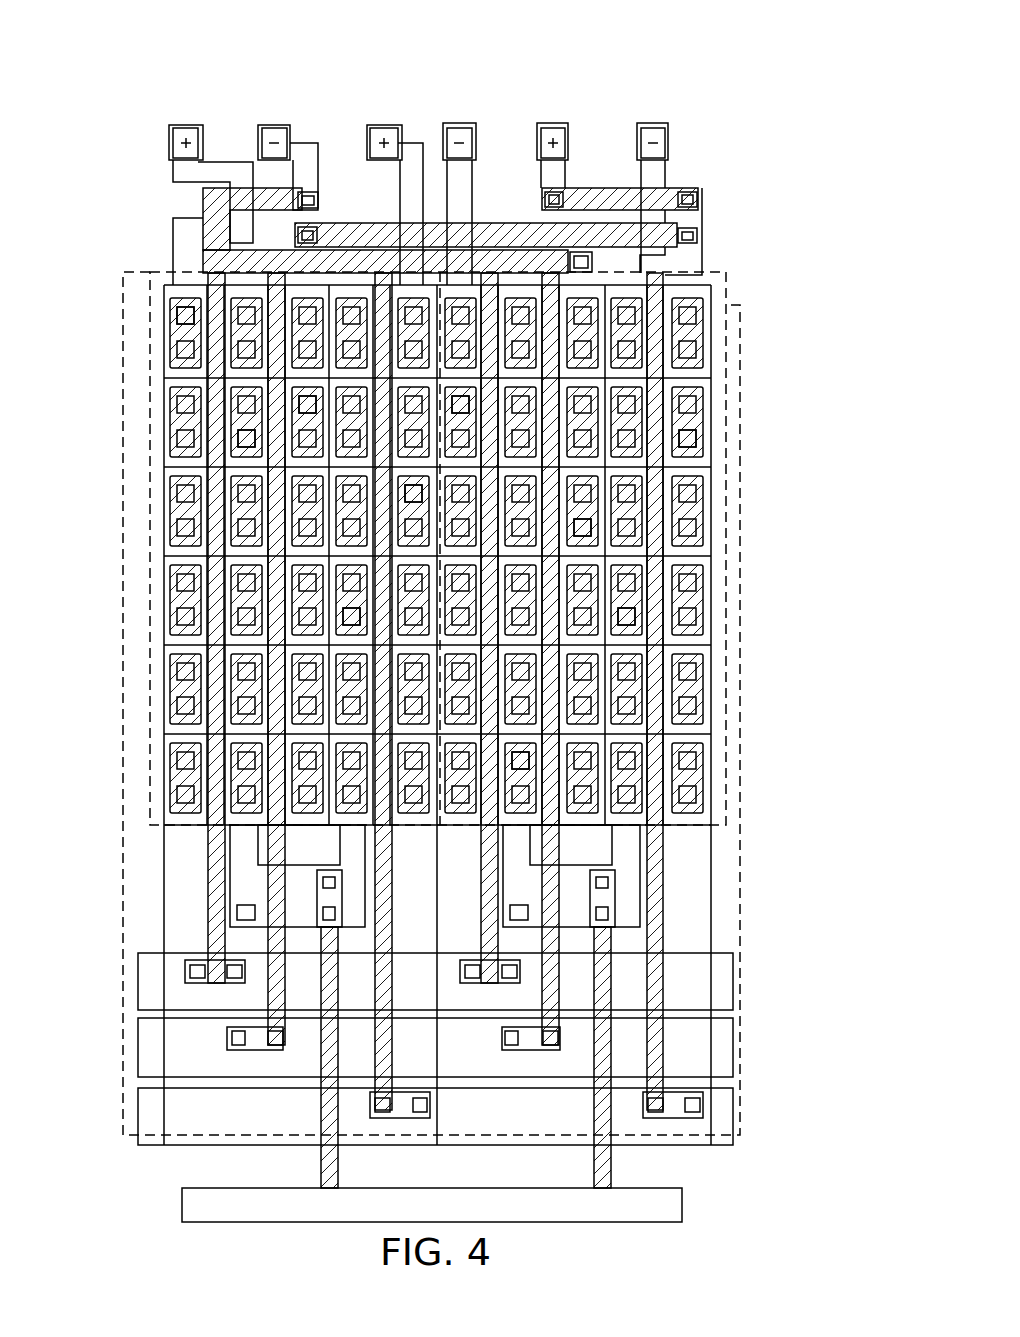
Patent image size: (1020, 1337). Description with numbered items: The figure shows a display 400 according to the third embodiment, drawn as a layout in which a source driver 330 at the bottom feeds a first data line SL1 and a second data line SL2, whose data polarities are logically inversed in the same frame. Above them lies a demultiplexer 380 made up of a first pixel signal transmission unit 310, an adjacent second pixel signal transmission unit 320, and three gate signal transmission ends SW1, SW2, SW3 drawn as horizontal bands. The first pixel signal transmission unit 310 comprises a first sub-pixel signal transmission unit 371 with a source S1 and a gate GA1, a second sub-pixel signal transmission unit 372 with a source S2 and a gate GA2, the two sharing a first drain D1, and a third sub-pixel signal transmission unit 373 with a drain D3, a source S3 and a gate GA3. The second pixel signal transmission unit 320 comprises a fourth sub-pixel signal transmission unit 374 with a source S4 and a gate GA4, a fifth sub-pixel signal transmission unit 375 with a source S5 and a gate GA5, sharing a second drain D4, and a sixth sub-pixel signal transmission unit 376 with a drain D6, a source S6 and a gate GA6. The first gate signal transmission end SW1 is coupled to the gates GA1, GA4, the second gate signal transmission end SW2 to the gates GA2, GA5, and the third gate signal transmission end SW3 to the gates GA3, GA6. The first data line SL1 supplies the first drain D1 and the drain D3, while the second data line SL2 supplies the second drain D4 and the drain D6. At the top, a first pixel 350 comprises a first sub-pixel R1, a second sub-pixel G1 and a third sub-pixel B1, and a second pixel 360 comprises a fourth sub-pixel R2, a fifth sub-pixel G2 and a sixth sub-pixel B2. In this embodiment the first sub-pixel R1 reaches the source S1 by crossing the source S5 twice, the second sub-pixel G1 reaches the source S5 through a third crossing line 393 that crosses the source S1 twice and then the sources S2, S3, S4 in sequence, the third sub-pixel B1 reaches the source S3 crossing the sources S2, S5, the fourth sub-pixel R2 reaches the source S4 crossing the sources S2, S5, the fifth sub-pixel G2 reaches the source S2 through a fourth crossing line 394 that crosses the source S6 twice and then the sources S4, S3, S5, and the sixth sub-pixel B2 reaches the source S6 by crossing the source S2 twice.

The display 400 is at (762, 101).
The first pixel signal transmission unit 310 is at (142, 284).
The second pixel signal transmission unit 320 is at (730, 305).
The demultiplexer 380 is at (733, 273).
The first pixel 350 is at (440, 53).
The second pixel 360 is at (712, 53).
The first sub-pixel signal transmission unit 371 is at (267, 93).
The second sub-pixel signal transmission unit 372 is at (332, 110).
The third sub-pixel signal transmission unit 373 is at (440, 110).
The fourth sub-pixel signal transmission unit 374 is at (530, 93).
The fifth sub-pixel signal transmission unit 375 is at (612, 110).
The sixth sub-pixel signal transmission unit 376 is at (712, 110).
The third crossing line 393 is at (204, 206).
The fourth crossing line 394 is at (602, 186).
The source driver 330 is at (458, 1216).
The source S1 is at (171, 313).
The source S2 is at (304, 403).
The source S3 is at (407, 494).
The source S4 is at (456, 402).
The source S5 is at (590, 526).
The source S6 is at (697, 437).
The first drain D1 is at (236, 438).
The drain D3 is at (341, 619).
The second drain D4 is at (519, 760).
The drain D6 is at (627, 619).
The gate GA1 is at (212, 352).
The gate GA2 is at (278, 583).
The gate GA3 is at (379, 684).
The gate GA4 is at (492, 584).
The gate GA5 is at (554, 691).
The gate GA6 is at (657, 488).
The first gate signal transmission end SW1 is at (138, 976).
The second gate signal transmission end SW2 is at (138, 1044).
The third gate signal transmission end SW3 is at (138, 1108).
The first data line SL1 is at (351, 1057).
The second data line SL2 is at (626, 1057).
The first sub-pixel R1 is at (211, 193).
The second sub-pixel G1 is at (287, 155).
The third sub-pixel B1 is at (395, 193).
The fourth sub-pixel R2 is at (459, 193).
The fifth sub-pixel G2 is at (553, 144).
The sixth sub-pixel B2 is at (669, 188).